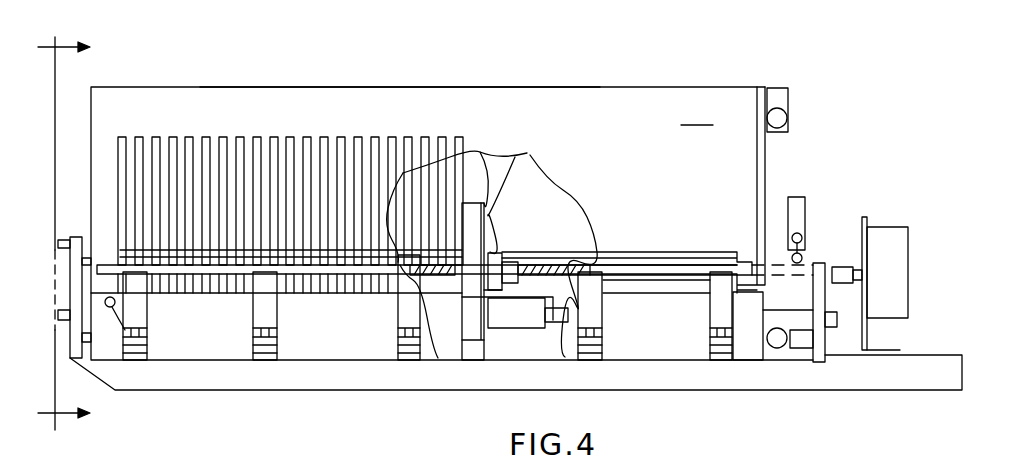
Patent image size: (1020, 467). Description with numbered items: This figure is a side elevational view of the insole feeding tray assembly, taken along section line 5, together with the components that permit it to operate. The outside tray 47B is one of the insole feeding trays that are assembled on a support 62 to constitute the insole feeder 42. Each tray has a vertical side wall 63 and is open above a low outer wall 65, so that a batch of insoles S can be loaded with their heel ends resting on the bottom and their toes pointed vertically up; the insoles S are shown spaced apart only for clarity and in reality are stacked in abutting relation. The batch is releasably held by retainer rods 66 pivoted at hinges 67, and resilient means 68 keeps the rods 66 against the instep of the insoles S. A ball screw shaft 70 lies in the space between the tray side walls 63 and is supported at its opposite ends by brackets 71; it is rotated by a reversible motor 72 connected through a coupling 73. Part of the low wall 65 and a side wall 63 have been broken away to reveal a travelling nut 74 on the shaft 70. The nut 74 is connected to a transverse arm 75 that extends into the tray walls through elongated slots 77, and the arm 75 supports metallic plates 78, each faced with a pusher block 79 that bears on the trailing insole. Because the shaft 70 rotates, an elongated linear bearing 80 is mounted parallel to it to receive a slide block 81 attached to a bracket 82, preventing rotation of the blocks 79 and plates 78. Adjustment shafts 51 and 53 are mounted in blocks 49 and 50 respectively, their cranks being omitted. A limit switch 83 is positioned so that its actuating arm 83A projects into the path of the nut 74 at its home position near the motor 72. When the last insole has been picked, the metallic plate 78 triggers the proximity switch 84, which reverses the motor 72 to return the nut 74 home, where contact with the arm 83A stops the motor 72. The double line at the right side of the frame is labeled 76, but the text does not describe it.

The section line 5- 5 is at (64, 231).
The insole feeder 42 is at (630, 84).
The outside tray 47B is at (696, 115).
The block 49 is at (785, 92).
The block 50 is at (777, 348).
The adjustment shaft 51 is at (788, 118).
The adjustment shaft 53 is at (778, 352).
The support 62 is at (325, 385).
The vertical side wall 63 is at (352, 86).
The low outer wall 65 is at (188, 360).
The retainer rod 66 is at (208, 268).
The hinge 67 is at (398, 340).
The resilient means 68 is at (125, 330).
The ball screw shaft 70 is at (590, 252).
The bracket 71 is at (78, 355).
The reversible motor 72 is at (888, 240).
The coupling 73 is at (843, 264).
The travelling nut 74 is at (512, 262).
The transverse arm 75 is at (497, 252).
The side frame plate 76 is at (757, 160).
The elongated slot 77 is at (655, 252).
The metallic plate 78 is at (511, 163).
The pusher block 79 is at (478, 156).
The elongated linear bearing 80 is at (560, 325).
The slide block 81 is at (505, 322).
The bracket 82 is at (530, 320).
The limit switch 83 is at (800, 205).
The actuating arm 83A is at (790, 258).
The proximity switch 84 is at (62, 237).
The insoles S is at (325, 135).